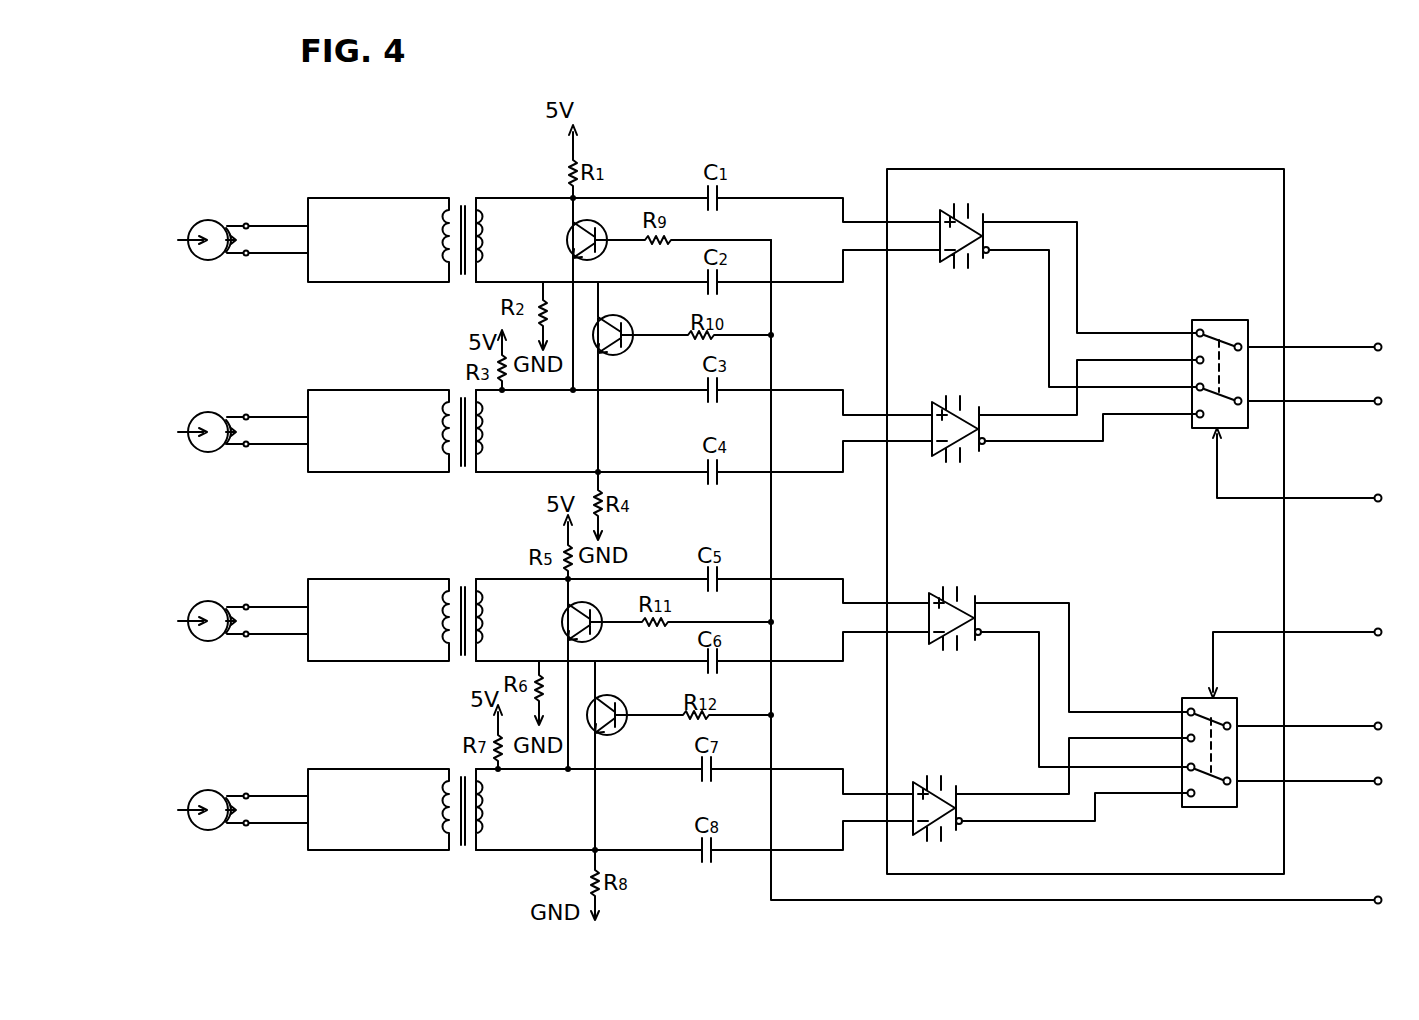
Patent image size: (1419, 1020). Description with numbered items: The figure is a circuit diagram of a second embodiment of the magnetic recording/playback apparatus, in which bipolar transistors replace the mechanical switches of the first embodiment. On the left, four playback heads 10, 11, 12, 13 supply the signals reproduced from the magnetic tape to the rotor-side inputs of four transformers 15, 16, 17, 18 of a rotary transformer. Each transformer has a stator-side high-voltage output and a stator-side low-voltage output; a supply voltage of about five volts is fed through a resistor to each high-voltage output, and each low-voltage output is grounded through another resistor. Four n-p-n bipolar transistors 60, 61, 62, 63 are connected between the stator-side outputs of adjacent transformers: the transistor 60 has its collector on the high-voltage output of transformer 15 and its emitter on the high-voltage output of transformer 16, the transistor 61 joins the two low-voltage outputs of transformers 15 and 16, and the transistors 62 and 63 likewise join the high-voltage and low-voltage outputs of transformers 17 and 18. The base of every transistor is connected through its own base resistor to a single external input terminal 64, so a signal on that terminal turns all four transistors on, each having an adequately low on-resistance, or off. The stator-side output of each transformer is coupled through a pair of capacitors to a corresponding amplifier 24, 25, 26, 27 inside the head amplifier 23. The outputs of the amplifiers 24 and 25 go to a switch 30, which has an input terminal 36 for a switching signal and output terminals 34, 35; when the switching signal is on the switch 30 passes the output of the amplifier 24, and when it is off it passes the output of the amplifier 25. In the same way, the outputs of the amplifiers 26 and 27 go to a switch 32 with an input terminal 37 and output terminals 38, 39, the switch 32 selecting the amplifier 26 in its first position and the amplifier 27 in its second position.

The playback head 10 is at (230, 222).
The playback head 11 is at (228, 412).
The playback head 12 is at (230, 602).
The playback head 13 is at (230, 792).
The transformer 15 is at (451, 198).
The transformer 16 is at (451, 390).
The transformer 17 is at (451, 579).
The transformer 18 is at (451, 769).
The head amplifier 23 is at (1258, 168).
The amplifier 24 is at (946, 268).
The amplifier 25 is at (945, 460).
The amplifier 26 is at (937, 648).
The amplifier 27 is at (921, 838).
The switch 30 is at (1253, 312).
The switch 32 is at (1257, 812).
The output terminal 34 is at (1382, 350).
The output terminal 35 is at (1382, 404).
The input terminal 36 is at (1382, 501).
The input terminal 37 is at (1382, 635).
The output terminal 38 is at (1382, 729).
The output terminal 39 is at (1382, 784).
The bipolar transistor 60 is at (572, 229).
The bipolar transistor 61 is at (616, 316).
The bipolar transistor 62 is at (567, 610).
The bipolar transistor 63 is at (612, 697).
The external input terminal 64 is at (1377, 896).